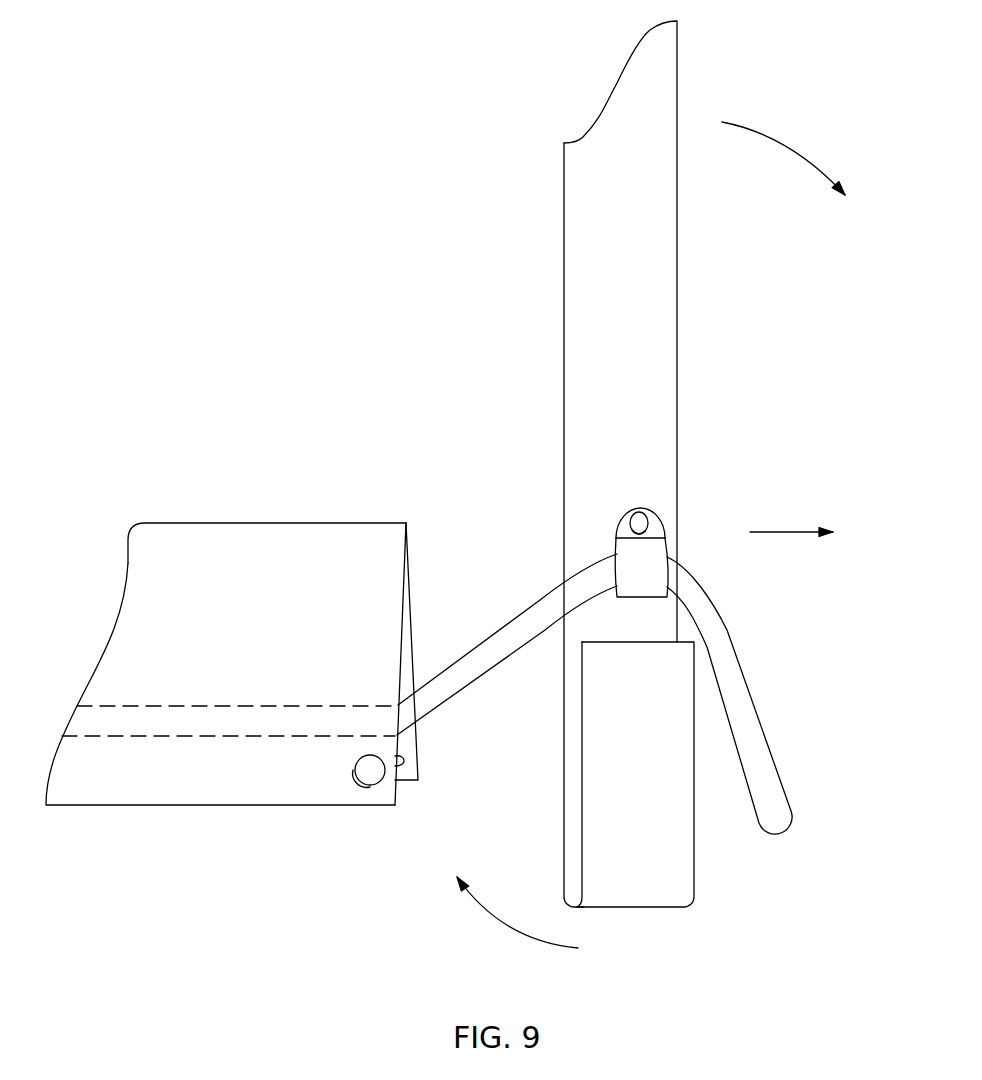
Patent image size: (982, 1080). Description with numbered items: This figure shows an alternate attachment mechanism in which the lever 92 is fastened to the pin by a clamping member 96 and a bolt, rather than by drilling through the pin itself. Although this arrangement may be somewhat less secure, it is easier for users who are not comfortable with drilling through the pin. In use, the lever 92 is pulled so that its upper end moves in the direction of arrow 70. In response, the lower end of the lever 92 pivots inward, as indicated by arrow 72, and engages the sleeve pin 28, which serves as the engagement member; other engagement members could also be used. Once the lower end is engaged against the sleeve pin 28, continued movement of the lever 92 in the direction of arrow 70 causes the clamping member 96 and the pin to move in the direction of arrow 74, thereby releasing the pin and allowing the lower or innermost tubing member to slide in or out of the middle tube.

The arrow 70 is at (792, 143).
The lever 92 is at (650, 317).
The clamping member 96 is at (647, 568).
The arrow 74 is at (783, 537).
The arrow 72 is at (508, 927).
The sleeve pin 28 is at (367, 770).